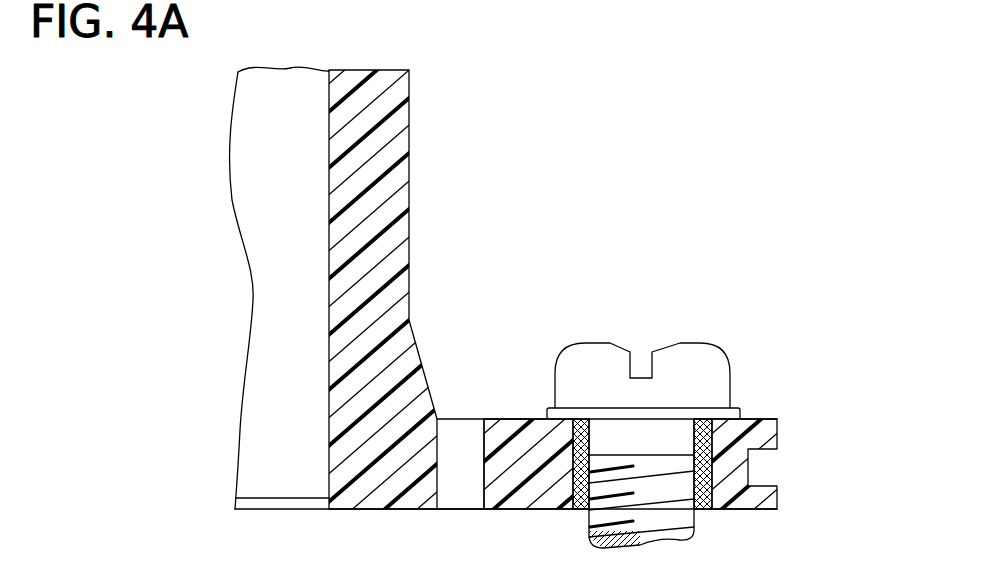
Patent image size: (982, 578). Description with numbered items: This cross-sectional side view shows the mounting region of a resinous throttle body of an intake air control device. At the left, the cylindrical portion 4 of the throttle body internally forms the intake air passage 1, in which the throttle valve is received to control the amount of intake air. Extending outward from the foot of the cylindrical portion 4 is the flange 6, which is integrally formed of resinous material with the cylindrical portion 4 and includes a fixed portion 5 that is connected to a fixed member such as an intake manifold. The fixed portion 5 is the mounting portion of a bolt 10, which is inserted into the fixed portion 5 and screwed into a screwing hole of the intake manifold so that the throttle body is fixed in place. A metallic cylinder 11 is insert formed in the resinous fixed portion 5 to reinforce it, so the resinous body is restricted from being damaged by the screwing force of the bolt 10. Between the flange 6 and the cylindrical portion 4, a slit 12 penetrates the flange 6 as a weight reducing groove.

The intake air passage 1 is at (286, 100).
The cylindrical portion 4 is at (398, 148).
The fixed portion 5 is at (733, 521).
The flange 6 is at (513, 510).
The bolt 10 is at (688, 357).
The metallic cylinder 11 is at (704, 455).
The slit 12 is at (463, 432).